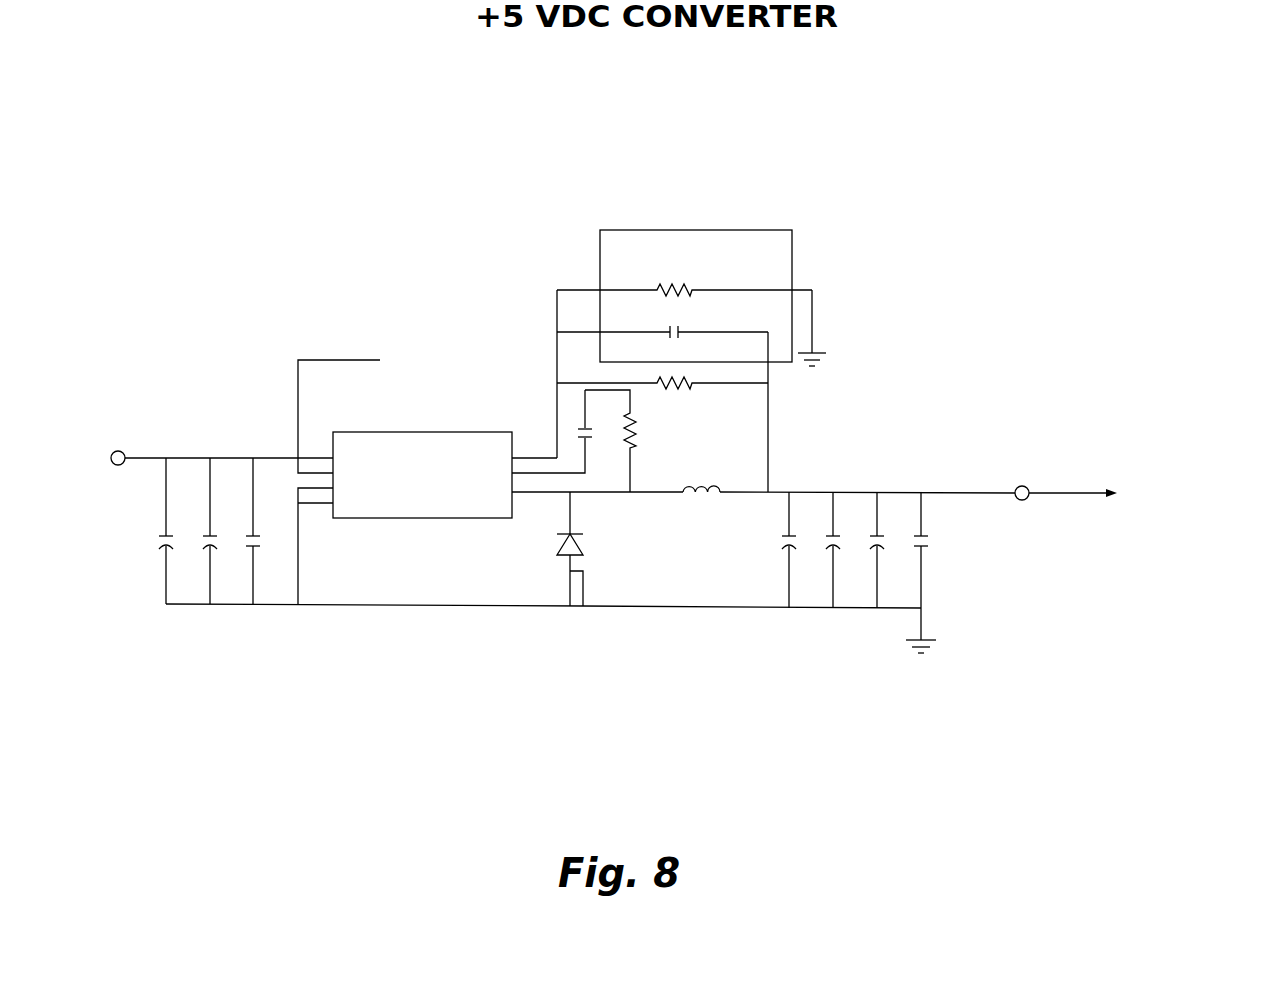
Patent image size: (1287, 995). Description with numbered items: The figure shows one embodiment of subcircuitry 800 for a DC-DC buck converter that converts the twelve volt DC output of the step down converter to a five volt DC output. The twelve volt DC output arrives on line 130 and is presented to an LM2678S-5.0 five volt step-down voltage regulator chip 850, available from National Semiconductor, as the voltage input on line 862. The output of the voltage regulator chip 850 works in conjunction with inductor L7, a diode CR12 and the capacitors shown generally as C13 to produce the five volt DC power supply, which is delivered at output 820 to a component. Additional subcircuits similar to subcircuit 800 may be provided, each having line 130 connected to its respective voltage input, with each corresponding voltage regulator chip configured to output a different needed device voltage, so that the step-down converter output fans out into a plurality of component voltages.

The subcircuitry 800 is at (1132, 112).
The line 130 is at (118, 451).
The line 862 is at (283, 457).
The voltage regulator chip 850 is at (428, 447).
The +5 VDC output connection to component 820 is at (1022, 486).
The Schottky diode MBRB1045 CR12 is at (602, 567).
The inductor L7 is at (703, 494).
The capacitors C13 is at (918, 613).